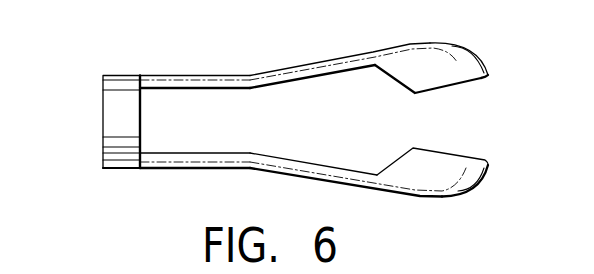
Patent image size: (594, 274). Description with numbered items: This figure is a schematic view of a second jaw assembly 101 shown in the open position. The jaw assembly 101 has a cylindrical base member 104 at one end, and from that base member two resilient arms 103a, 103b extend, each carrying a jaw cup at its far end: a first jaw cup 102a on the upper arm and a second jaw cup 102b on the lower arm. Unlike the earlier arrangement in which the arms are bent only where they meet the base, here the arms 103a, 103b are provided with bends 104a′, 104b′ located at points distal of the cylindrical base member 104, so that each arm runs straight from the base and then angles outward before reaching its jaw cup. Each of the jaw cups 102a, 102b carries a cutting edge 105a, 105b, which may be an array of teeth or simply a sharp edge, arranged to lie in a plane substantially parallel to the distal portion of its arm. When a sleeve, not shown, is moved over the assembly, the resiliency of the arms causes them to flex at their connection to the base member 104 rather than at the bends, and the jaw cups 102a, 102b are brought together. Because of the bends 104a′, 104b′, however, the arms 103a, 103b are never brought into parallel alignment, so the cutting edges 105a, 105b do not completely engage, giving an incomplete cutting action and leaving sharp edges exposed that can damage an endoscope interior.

The jaw assembly 101 is at (137, 210).
The cylindrical base member 104 is at (122, 76).
The bend 104a′ is at (173, 81).
The bend 104b′ is at (238, 153).
The resilient arm 103a is at (302, 65).
The resilient arm 103b is at (275, 162).
The first jaw cup 102a is at (442, 52).
The second jaw cup 102b is at (450, 195).
The cutting edge 105a is at (452, 86).
The cutting edge 105b is at (443, 155).